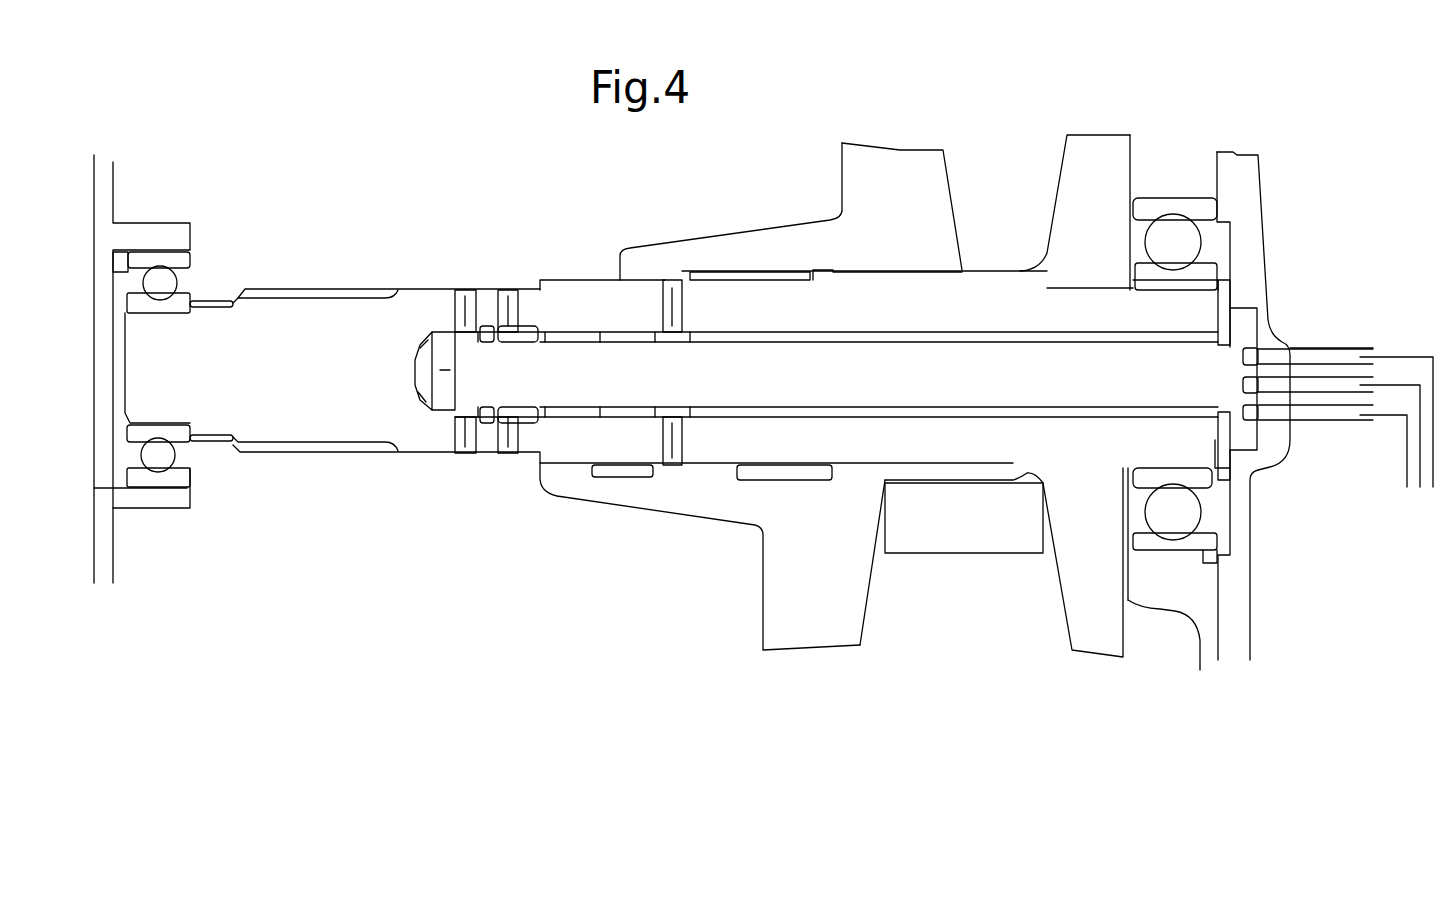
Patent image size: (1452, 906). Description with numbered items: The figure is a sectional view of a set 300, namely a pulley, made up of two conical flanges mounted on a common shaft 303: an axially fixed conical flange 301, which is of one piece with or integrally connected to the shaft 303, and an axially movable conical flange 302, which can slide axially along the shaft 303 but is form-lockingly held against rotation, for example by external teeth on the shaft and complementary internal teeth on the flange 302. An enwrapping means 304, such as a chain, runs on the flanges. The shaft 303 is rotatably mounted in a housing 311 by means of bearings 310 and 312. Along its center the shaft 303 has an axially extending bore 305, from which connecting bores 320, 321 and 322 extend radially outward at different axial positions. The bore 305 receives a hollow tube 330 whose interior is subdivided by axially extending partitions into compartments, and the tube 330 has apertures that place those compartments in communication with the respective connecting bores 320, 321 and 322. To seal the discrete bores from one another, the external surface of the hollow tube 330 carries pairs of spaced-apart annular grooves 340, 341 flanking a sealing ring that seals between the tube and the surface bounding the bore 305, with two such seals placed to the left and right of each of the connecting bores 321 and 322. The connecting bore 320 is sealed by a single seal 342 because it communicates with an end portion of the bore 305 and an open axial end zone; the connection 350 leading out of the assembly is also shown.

The set of two conical flanges 300 is at (1133, 112).
The axially fixed conical flange 301 is at (1118, 188).
The axially movable conical flange 302 is at (933, 180).
The shaft 303 is at (993, 290).
The enwrapping means 304 is at (990, 535).
The axially extending bore 305 is at (442, 350).
The bearing 310 is at (178, 258).
The housing 311 is at (157, 240).
The bearing 312 is at (1200, 237).
The connecting bore 320 is at (459, 455).
The connecting bore 321 is at (508, 455).
The connecting bore 322 is at (678, 452).
The hollow tube 330 is at (863, 413).
The annular groove 340 is at (482, 332).
The annular groove 341 is at (508, 337).
The seal 342 is at (490, 333).
The connecting wires 350 is at (1375, 340).